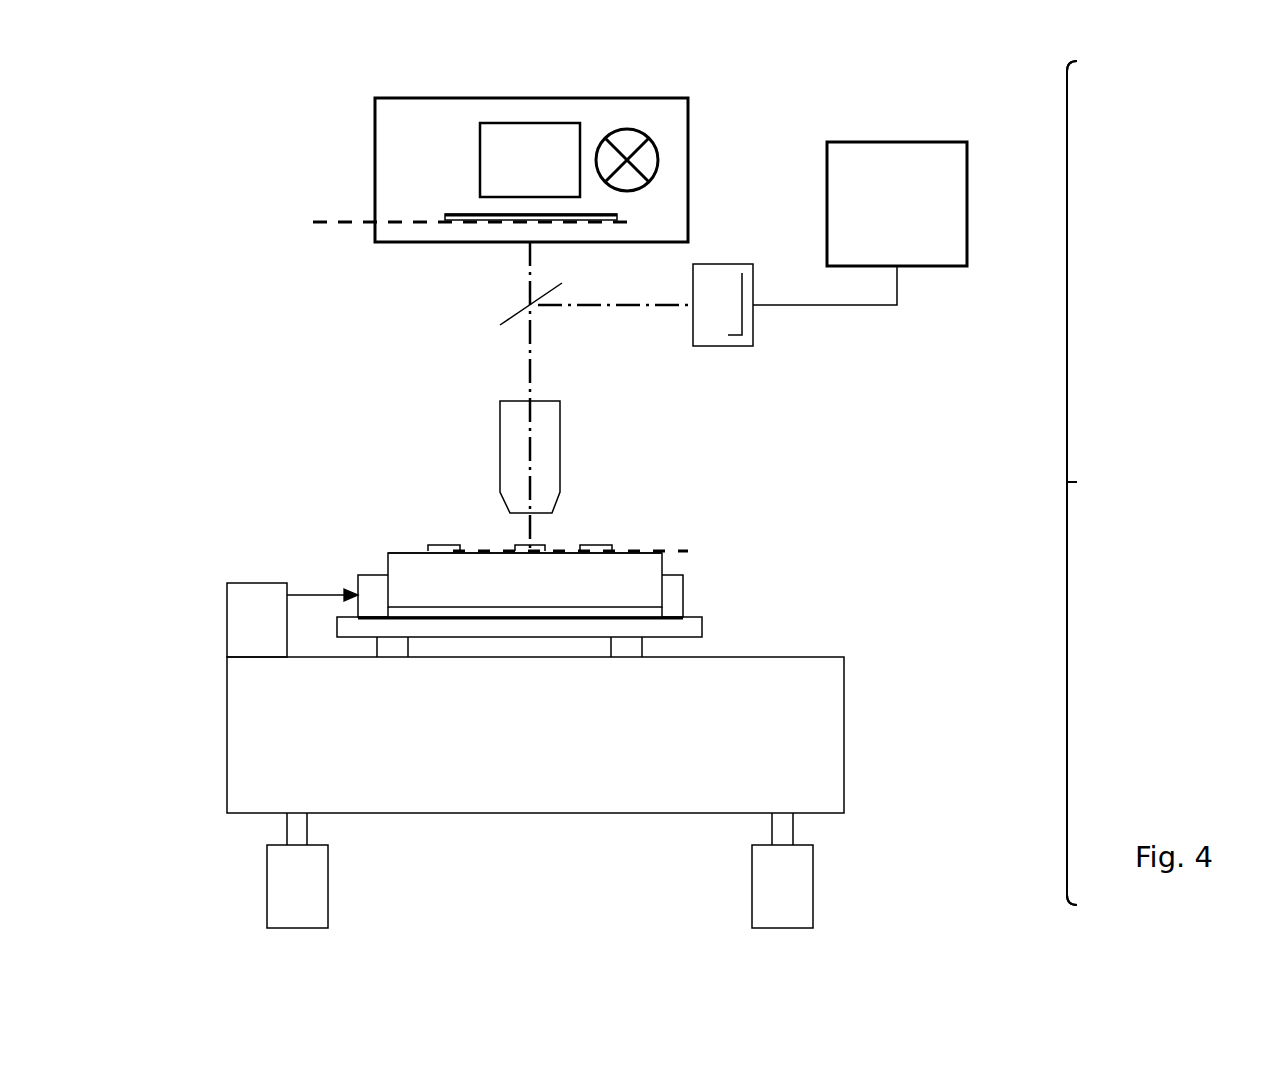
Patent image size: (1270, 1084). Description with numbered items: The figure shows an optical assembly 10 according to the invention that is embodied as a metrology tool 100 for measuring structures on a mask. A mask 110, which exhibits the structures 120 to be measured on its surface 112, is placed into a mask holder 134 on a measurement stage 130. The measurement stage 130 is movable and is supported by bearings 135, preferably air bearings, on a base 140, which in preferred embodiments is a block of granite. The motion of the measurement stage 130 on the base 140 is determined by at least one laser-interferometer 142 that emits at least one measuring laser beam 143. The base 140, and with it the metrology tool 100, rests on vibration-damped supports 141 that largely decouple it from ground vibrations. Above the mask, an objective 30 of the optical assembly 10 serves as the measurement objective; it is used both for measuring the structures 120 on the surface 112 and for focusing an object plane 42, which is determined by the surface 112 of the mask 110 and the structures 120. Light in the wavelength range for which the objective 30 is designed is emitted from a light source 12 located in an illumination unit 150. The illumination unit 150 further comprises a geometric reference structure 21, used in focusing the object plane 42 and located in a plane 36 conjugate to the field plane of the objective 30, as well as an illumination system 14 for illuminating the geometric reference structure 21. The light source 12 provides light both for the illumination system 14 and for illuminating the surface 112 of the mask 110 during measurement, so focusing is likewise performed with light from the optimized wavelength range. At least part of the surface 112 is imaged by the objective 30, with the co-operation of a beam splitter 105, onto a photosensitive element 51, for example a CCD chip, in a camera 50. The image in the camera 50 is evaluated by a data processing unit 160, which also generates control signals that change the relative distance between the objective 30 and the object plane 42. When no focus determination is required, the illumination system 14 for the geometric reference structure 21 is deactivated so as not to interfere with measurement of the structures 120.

The optical assembly 10 is at (1111, 483).
The metrology tool 100 is at (1115, 483).
The illumination unit 150 is at (375, 142).
The illumination system 14 is at (549, 176).
The light source 12 is at (630, 142).
The geometric reference structure 21 is at (445, 212).
The plane conjugate to field plane 36 is at (338, 227).
The beam splitter 105 is at (517, 313).
The objective 30 is at (554, 428).
The camera 50 is at (705, 275).
The photosensitive element 51 is at (742, 312).
The data processing unit 160 is at (922, 221).
The object plane 42 is at (660, 553).
The structures 120 is at (443, 543).
The mask 110 is at (403, 575).
The surface 112 is at (403, 550).
The mask holder 134 is at (675, 603).
The measurement stage 130 is at (697, 623).
The bearings 135 is at (635, 652).
The laser-interferometer 142 is at (227, 611).
The measuring laser beam 143 is at (337, 593).
The base 140 is at (538, 761).
The vibration-damped supports 141 is at (293, 890).